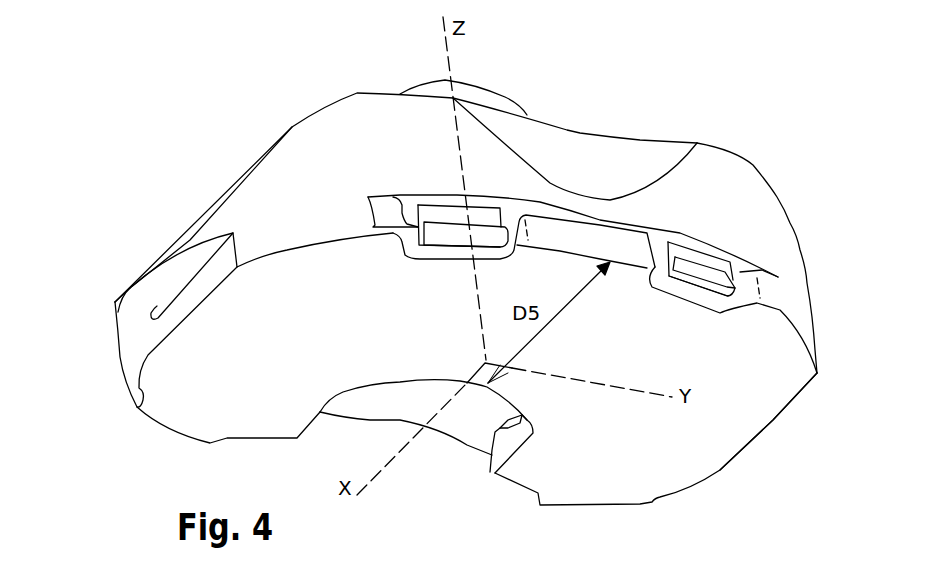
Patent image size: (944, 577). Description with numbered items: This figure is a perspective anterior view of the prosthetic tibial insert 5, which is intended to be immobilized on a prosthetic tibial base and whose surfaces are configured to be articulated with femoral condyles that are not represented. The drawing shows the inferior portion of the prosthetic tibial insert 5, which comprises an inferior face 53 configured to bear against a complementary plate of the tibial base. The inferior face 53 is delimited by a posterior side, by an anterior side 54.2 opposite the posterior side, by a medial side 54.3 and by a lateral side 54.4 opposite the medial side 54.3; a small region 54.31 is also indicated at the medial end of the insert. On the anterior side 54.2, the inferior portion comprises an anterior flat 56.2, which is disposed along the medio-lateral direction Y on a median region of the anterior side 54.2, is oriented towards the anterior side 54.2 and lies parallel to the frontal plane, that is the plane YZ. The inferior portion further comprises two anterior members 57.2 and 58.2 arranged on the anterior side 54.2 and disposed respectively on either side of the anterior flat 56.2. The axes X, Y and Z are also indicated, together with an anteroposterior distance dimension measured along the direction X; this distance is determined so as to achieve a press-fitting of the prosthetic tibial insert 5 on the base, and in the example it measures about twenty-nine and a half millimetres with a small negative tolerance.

The prosthetic tibial insert 5 is at (403, 498).
The inferior face 53 is at (660, 445).
The anterior side 54.2 is at (697, 190).
The medial side 54.3 is at (243, 217).
The end face sub-surface 54.31 is at (152, 316).
The lateral side 54.4 is at (776, 422).
The anterior flat 56.2 is at (570, 233).
The anterior member 57.2 is at (433, 210).
The anterior member 58.2 is at (710, 280).